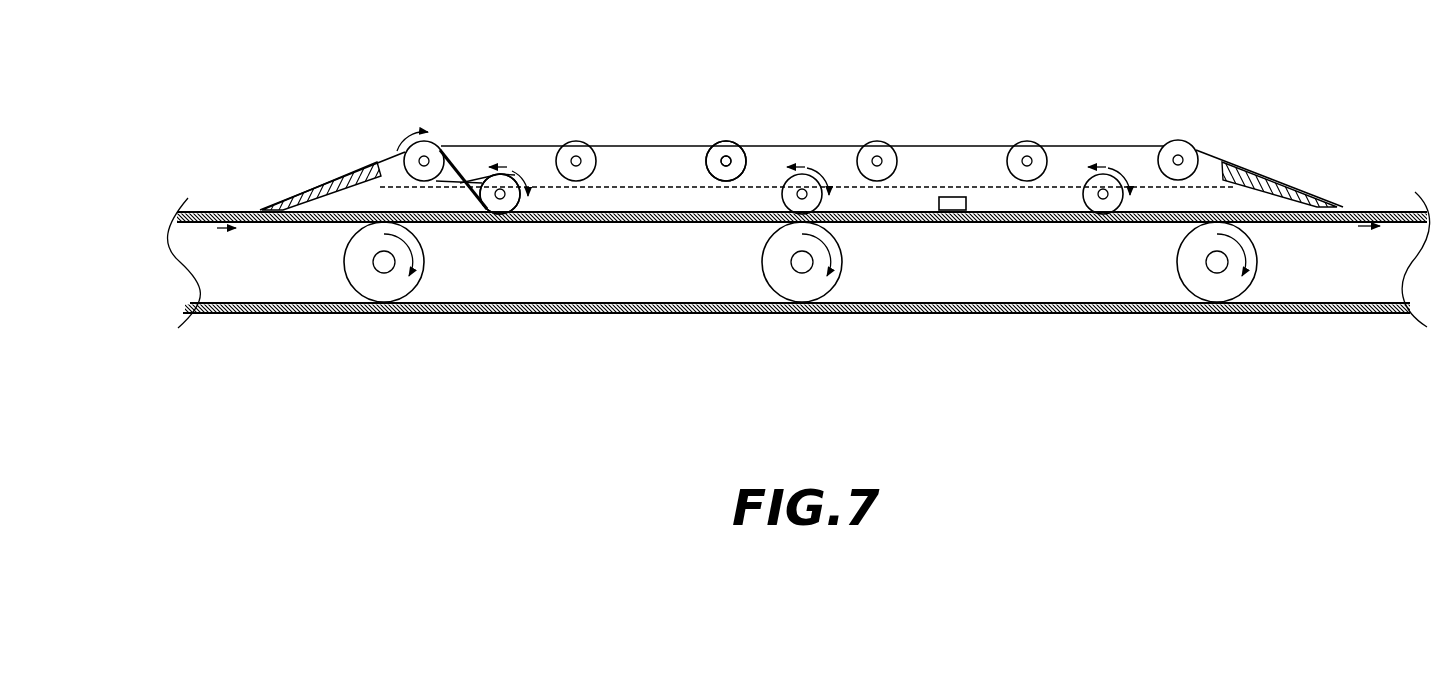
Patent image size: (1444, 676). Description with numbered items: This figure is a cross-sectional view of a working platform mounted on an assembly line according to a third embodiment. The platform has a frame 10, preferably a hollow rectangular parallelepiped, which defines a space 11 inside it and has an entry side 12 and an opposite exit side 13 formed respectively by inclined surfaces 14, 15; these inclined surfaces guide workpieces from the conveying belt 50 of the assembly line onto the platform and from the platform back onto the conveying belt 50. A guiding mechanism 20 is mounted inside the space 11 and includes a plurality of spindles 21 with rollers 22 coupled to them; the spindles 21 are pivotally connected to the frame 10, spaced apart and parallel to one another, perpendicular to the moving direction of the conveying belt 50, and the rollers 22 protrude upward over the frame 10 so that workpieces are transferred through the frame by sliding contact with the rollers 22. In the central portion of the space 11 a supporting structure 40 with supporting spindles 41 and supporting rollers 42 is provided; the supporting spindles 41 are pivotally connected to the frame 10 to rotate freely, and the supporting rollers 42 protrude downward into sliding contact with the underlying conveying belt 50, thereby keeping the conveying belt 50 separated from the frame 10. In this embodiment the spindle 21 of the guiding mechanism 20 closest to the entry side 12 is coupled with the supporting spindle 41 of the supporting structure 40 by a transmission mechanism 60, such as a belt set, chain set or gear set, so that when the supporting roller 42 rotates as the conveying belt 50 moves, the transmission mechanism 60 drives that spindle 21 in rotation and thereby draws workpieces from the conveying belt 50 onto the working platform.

The frame 10 is at (620, 145).
The space 11 is at (632, 172).
The entry side 12 is at (263, 210).
The exit side 13 is at (1345, 206).
The inclined surface 14 is at (350, 173).
The inclined surface 15 is at (1255, 175).
The guiding mechanism 20 is at (740, 126).
The spindle 21 is at (724, 158).
The roller 22 is at (710, 155).
The supporting structure 40 is at (527, 203).
The supporting spindle 41 is at (502, 191).
The supporting roller 42 is at (509, 179).
The conveying belt 50 is at (726, 340).
The transmission mechanism 60 is at (473, 175).